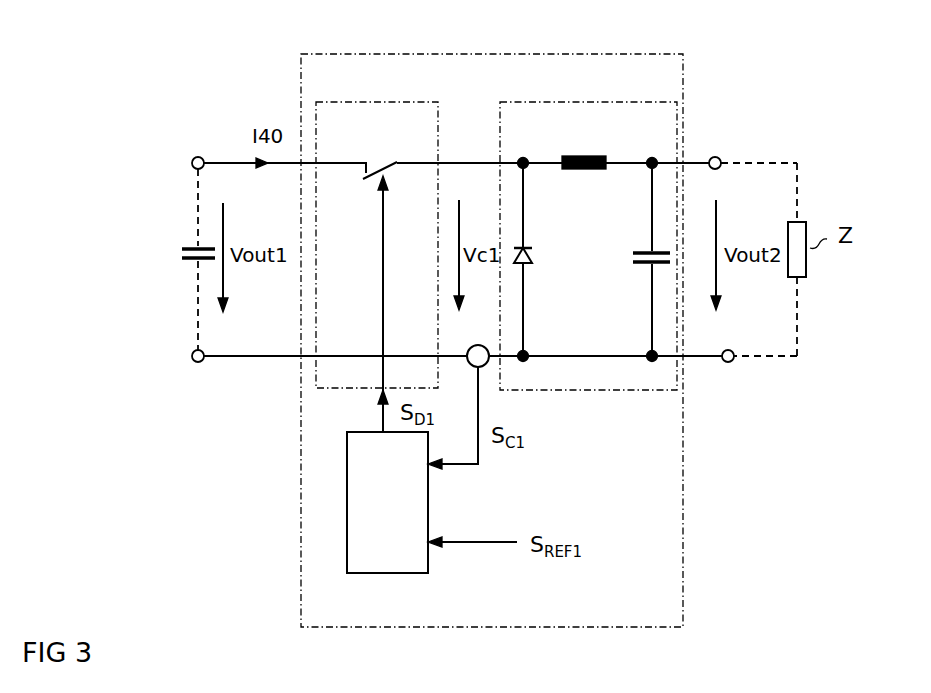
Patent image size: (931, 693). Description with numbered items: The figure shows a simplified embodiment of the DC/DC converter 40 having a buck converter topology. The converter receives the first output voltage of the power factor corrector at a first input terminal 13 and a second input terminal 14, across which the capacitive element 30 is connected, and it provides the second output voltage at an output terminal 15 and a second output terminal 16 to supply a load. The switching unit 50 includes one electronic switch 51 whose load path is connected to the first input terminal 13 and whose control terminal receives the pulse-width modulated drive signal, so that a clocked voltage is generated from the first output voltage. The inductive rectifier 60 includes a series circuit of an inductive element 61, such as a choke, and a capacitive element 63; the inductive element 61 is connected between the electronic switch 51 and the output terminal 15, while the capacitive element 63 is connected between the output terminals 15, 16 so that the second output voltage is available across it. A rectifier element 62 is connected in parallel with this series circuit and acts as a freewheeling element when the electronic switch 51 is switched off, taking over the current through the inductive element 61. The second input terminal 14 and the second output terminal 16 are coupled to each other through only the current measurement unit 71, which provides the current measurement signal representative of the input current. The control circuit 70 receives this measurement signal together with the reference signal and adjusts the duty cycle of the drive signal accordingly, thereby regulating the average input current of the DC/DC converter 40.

The first input terminal 13 is at (198, 156).
The second input terminal 14 is at (197, 363).
The output terminal 15 is at (716, 157).
The second output terminal 16 is at (731, 363).
The capacitive element 30 is at (181, 244).
The DC/DC converter 40 is at (492, 54).
The switching unit 50 is at (387, 101).
The electronic switch 51 is at (380, 153).
The inductive rectifier 60 is at (583, 101).
The inductive element 61 is at (583, 154).
The rectifier element 62 is at (534, 252).
The capacitive element 63 is at (633, 250).
The control circuit 70 is at (396, 575).
The current measurement unit 71 is at (479, 345).